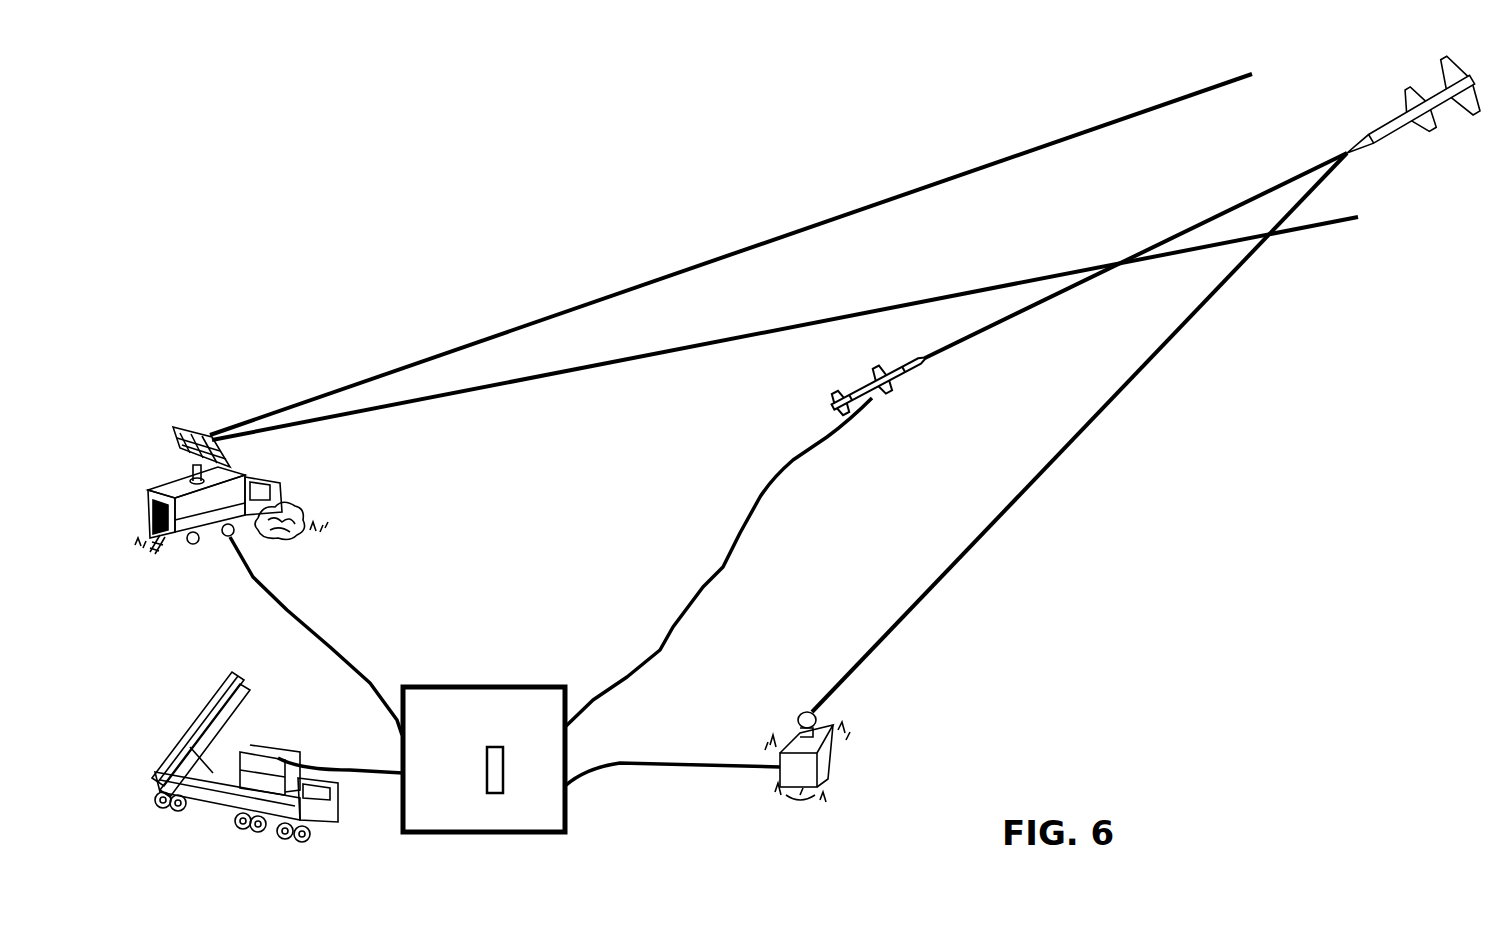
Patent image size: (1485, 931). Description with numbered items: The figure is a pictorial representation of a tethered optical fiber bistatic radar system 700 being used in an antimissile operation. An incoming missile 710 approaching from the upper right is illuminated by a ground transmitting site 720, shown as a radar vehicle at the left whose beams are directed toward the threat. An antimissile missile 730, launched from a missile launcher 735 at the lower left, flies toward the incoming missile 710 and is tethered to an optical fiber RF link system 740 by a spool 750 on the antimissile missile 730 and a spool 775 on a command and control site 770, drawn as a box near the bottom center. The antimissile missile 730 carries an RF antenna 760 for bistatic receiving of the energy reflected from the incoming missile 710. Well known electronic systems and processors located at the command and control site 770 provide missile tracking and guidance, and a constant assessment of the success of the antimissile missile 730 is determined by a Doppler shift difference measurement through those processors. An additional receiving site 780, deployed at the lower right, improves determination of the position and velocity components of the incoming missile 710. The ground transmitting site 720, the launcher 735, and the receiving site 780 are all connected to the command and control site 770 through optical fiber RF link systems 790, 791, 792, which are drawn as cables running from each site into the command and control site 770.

The tethered bistatic radar system 700 is at (1145, 632).
The incoming missile 710 is at (1405, 114).
The ground transmitting site 720 is at (195, 468).
The antimissile missile 730 is at (897, 376).
The missile launcher 735 is at (180, 733).
The optical fiber RF link system 740 is at (718, 562).
The spool 750 is at (855, 392).
The RF antenna 760 is at (920, 362).
The command and control site 770 is at (484, 747).
The spool 775 is at (565, 733).
The receiving site 780 is at (820, 714).
The optical fiber RF link system 790 is at (672, 759).
The optical fiber RF link system 791 is at (340, 752).
The optical fiber RF link system 792 is at (316, 636).